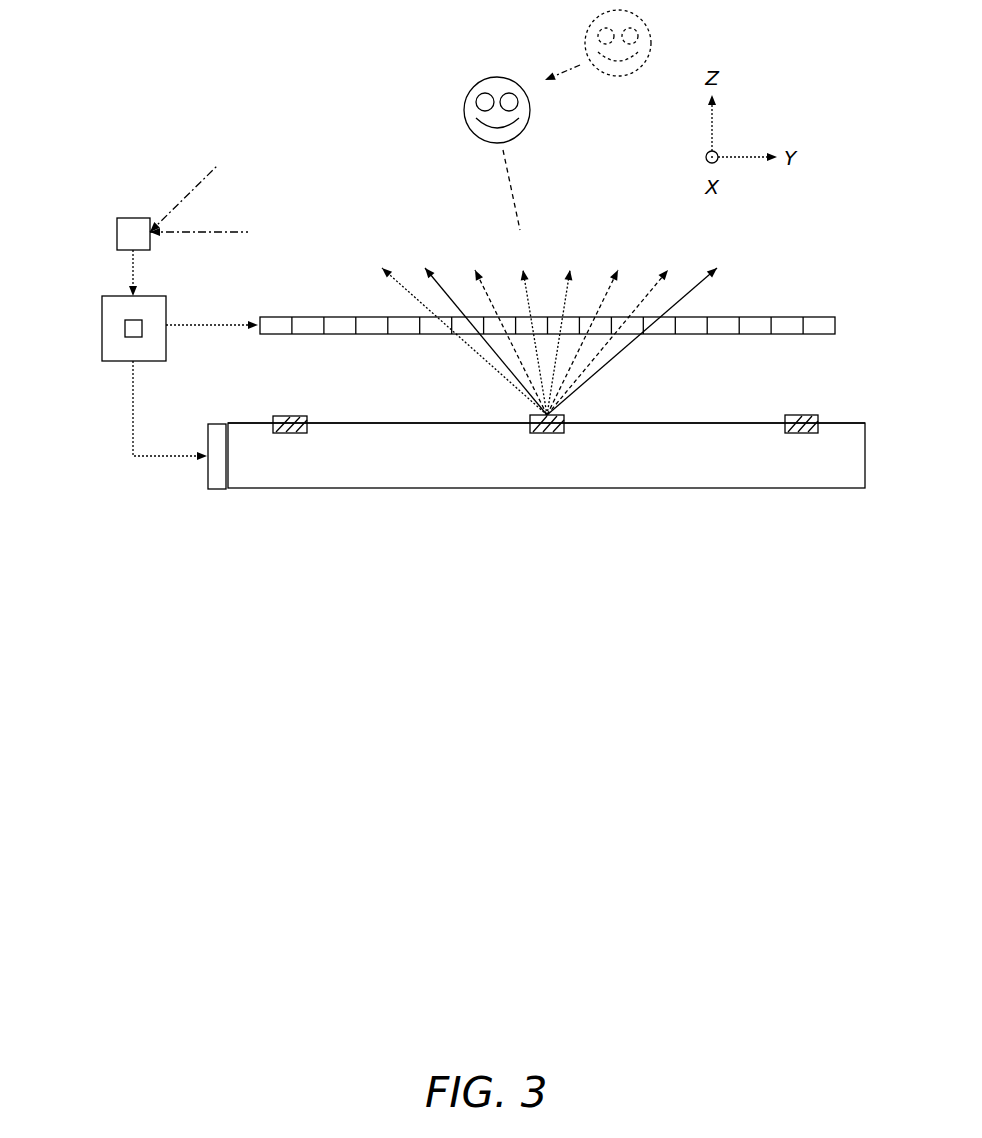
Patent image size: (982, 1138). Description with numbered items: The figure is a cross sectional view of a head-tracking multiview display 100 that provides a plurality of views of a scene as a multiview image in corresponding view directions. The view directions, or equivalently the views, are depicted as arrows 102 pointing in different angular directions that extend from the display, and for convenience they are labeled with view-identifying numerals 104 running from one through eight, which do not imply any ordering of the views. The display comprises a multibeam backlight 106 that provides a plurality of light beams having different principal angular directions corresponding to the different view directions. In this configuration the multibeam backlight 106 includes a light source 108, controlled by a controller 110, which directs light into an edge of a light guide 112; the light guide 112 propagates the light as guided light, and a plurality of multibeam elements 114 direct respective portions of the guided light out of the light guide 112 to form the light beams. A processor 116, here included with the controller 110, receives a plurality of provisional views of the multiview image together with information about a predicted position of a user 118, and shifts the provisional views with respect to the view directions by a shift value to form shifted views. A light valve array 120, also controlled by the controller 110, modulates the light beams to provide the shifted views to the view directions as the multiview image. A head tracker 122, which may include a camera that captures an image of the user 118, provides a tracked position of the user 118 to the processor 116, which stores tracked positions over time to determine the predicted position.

The head-tracking multiview display 100 is at (160, 134).
The arrows 102 is at (616, 391).
The view-identifying numerals 104 is at (746, 248).
The multibeam backlight 106 is at (744, 398).
The light source 108 is at (216, 424).
The controller 110 is at (125, 296).
The light guide 112 is at (392, 423).
The multibeam elements 114 is at (290, 433).
The processor 116 is at (125, 328).
The user 118 is at (497, 77).
The light valve array 120 is at (270, 317).
The head tracker 122 is at (133, 218).